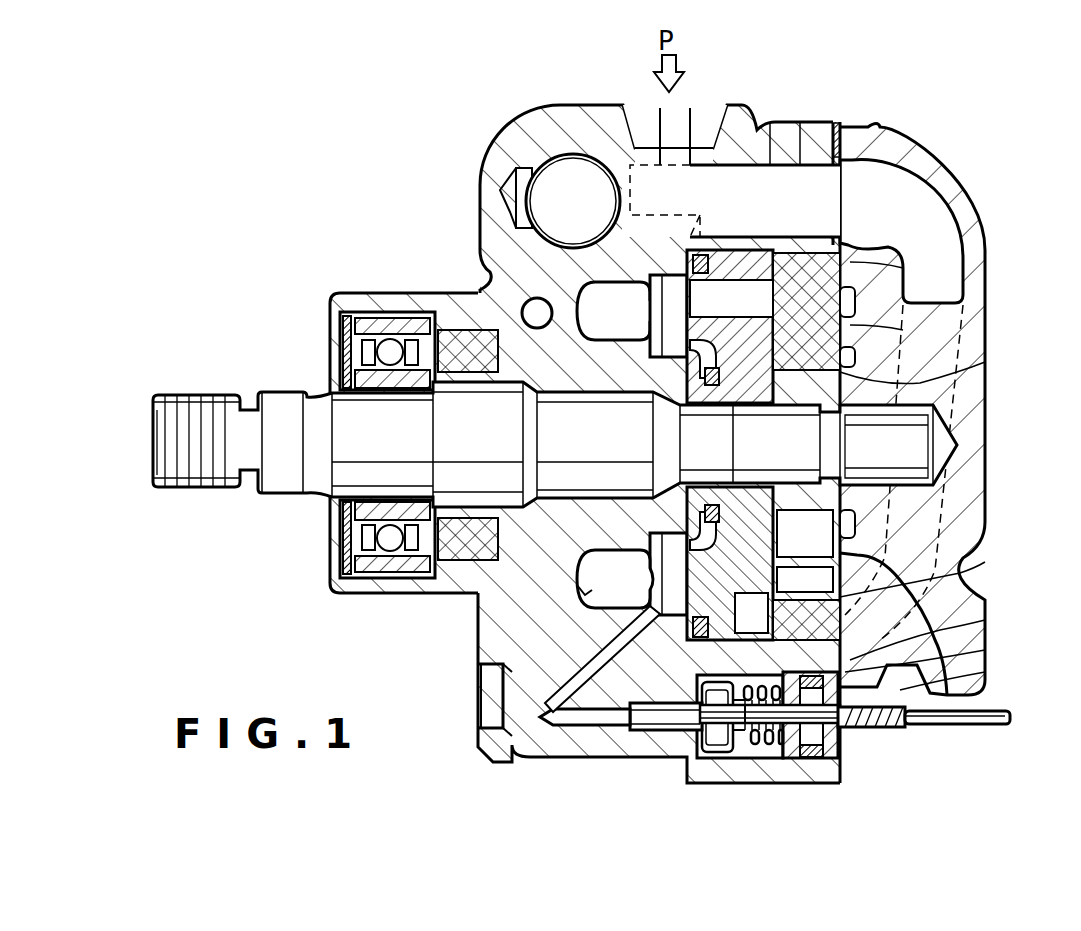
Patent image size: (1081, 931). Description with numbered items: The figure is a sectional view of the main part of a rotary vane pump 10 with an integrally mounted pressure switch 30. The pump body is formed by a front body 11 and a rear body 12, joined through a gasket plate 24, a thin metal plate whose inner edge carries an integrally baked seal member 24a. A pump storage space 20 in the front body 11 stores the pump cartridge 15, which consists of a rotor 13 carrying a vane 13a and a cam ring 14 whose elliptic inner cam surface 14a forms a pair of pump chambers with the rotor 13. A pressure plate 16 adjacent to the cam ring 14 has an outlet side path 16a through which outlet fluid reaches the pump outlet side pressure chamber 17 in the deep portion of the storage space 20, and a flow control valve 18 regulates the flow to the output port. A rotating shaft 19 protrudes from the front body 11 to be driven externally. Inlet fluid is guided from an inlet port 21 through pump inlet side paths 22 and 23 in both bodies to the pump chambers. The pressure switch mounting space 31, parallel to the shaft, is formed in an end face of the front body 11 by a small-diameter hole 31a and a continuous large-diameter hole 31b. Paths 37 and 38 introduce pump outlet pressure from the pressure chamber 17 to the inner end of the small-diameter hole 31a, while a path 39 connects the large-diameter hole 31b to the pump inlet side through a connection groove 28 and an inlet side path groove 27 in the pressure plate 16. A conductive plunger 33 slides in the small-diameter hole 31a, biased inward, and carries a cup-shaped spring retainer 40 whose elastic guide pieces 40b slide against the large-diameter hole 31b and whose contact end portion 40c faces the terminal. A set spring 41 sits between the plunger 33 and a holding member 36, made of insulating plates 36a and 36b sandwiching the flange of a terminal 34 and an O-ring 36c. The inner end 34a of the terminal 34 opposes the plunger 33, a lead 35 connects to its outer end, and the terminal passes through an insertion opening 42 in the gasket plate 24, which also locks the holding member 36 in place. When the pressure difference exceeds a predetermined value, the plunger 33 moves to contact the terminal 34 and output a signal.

The vane pump 10 is at (613, 99).
The front body 11 is at (500, 160).
The rear body 12 is at (940, 182).
The rotor 13 is at (985, 362).
The vane 13a is at (903, 330).
The cam ring 14 is at (880, 240).
The inner cam surface 14a is at (903, 268).
The pump cartridge 15 is at (920, 583).
The pressure plate 16 is at (728, 258).
The outlet side path 16a is at (707, 317).
The pump outlet side pressure chamber 17 is at (478, 603).
The flow control valve 18 is at (546, 154).
The rotating shaft 19 is at (201, 410).
The pump storage space 20 is at (780, 190).
The inlet port 21 is at (698, 112).
The pump inlet side path 22 is at (812, 150).
The pump inlet side path 23 is at (900, 197).
The gasket plate 24 is at (836, 122).
The seal member 24a is at (860, 160).
The inlet side path groove 27 is at (745, 596).
The connection groove 28 is at (768, 640).
The pressure switch 30 is at (698, 768).
The pressure switch mounting space 31 is at (758, 762).
The small-diameter hole 31a is at (648, 740).
The large-diameter hole 31b is at (830, 770).
The plunger 33 is at (690, 745).
The terminal 34 is at (848, 727).
The inner end 34a is at (818, 780).
The lead 35 is at (983, 727).
The holding member 36 is at (838, 782).
The plate 36a is at (945, 630).
The plate 36b is at (950, 672).
The O-ring 36c is at (950, 650).
The path 37 is at (490, 700).
The path 38 is at (582, 722).
The path 39 is at (722, 698).
The spring retainer 40 is at (785, 762).
The elastic guide piece 40b is at (722, 760).
The contact end portion 40c is at (690, 706).
The set spring 41 is at (835, 785).
The insertion opening 42 is at (845, 737).